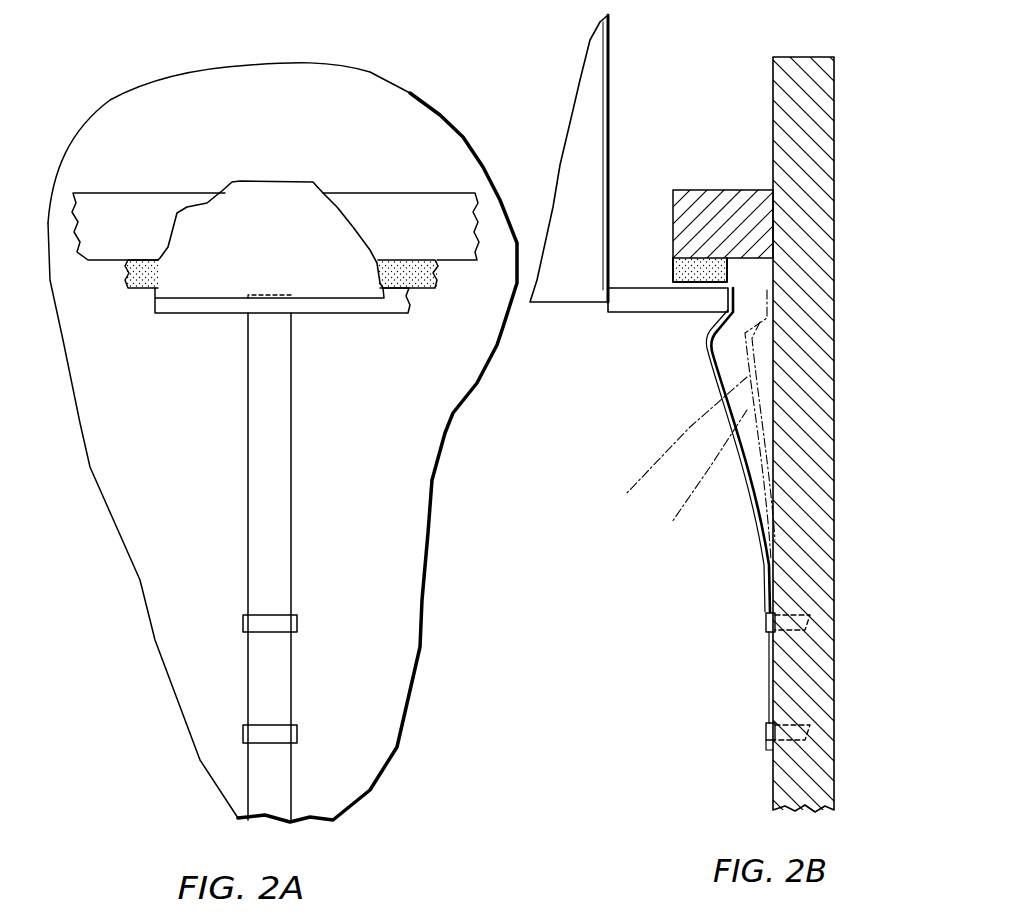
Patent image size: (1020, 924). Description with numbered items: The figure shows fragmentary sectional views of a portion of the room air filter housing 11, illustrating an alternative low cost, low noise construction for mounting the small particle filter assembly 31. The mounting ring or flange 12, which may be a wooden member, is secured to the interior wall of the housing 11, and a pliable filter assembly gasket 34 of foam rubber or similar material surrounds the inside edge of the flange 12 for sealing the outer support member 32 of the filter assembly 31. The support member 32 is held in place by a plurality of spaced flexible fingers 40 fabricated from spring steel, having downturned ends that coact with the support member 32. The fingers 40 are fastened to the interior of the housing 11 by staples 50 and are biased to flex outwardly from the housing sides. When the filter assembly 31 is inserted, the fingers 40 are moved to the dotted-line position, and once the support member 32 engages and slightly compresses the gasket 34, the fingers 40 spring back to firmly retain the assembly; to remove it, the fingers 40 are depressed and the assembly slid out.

In FIG. 2A, the housing 11 is at (428, 528).
In FIG. 2B, the housing 11 is at (834, 433).
In FIG. 2A, the mounting ring or flange 12 is at (382, 193).
In FIG. 2B, the mounting ring or flange 12 is at (730, 190).
In FIG. 2A, the small particle filter assembly 31 is at (257, 183).
In FIG. 2B, the small particle filter assembly 31 is at (572, 112).
In FIG. 2A, the outer support member 32 is at (397, 308).
In FIG. 2B, the outer support member 32 is at (653, 305).
In FIG. 2A, the filter assembly gasket 34 is at (440, 275).
In FIG. 2B, the filter assembly gasket 34 is at (675, 275).
In FIG. 2A, the flexible retaining fingers 40 is at (282, 428).
In FIG. 2B, the flexible retaining fingers 40 is at (743, 450).
In FIG. 2A, the staples 50 is at (287, 623).
In FIG. 2B, the staples 50 is at (766, 622).